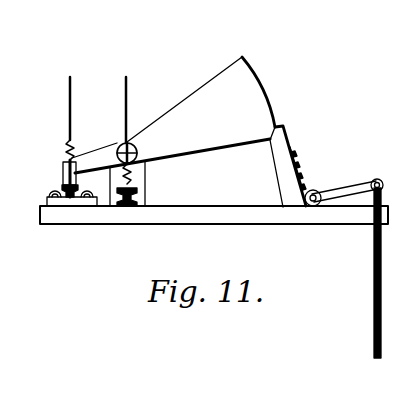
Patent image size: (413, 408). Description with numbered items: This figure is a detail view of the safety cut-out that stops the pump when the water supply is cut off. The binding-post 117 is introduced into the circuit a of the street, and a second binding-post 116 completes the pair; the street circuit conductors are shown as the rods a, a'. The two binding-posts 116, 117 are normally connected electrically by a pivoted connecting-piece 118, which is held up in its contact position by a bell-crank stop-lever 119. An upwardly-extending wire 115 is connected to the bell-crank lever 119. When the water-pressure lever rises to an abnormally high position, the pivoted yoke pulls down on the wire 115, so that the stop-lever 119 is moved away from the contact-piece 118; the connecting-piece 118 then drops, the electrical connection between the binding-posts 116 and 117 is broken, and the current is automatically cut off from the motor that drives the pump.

The wire 115 is at (373, 262).
The binding-post 116 is at (57, 233).
The binding-post 117 is at (128, 220).
The pivoted connecting-piece 118 is at (203, 142).
The bell-crank stop-lever 119 is at (292, 188).
The circuit a is at (58, 108).
The rod a' is at (116, 110).